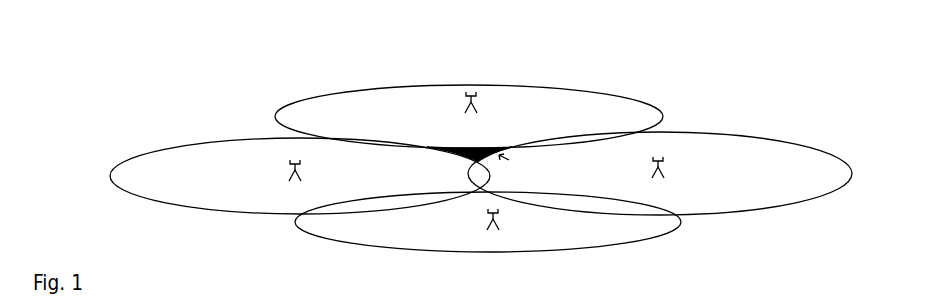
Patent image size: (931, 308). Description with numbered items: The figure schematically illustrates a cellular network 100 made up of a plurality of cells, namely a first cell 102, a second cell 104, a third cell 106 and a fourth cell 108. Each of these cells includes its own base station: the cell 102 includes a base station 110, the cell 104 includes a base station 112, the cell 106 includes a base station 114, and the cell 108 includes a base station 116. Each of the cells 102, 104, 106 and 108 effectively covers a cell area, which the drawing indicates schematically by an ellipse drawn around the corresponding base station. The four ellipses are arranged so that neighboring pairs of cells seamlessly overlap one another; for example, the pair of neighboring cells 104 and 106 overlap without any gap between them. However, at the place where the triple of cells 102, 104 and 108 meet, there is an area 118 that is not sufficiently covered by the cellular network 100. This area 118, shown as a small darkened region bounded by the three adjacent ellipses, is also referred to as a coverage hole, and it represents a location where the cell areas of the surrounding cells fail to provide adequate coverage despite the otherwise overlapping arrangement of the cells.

The cellular network 100 is at (132, 58).
The cell 102 is at (365, 88).
The cell 104 is at (123, 160).
The cell 106 is at (660, 240).
The cell 108 is at (784, 138).
The base station 110 is at (460, 105).
The base station 112 is at (282, 163).
The base station 114 is at (500, 238).
The base station 116 is at (667, 148).
The area 118 is at (479, 148).